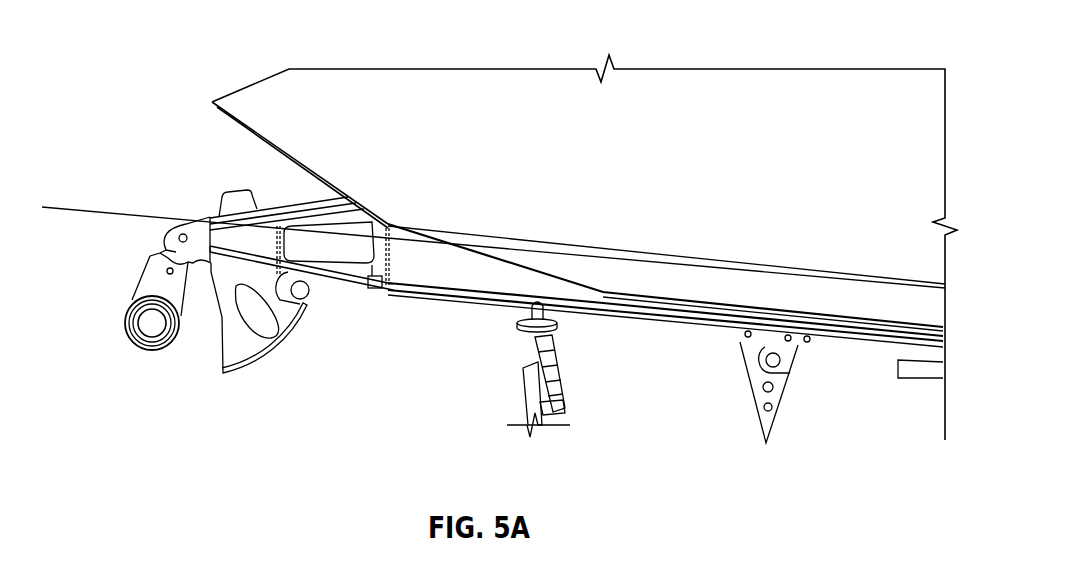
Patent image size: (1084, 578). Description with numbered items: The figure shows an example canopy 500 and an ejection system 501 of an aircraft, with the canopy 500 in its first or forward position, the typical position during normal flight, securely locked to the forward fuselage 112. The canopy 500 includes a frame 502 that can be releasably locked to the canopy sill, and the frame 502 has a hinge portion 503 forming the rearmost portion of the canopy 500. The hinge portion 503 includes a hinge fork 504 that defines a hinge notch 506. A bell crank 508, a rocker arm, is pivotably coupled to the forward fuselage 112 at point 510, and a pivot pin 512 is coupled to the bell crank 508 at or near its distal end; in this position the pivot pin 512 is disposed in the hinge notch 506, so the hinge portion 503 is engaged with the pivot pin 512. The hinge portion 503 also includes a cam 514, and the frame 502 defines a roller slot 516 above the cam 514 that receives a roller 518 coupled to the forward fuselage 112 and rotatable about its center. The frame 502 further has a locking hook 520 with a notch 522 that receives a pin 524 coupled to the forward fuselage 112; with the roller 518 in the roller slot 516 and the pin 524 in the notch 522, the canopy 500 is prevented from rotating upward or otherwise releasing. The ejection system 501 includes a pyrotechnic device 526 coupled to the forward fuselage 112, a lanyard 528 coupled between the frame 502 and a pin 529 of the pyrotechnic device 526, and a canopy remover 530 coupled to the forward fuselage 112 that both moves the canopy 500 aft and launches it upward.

The forward fuselage 112 is at (83, 207).
The canopy 500 is at (662, 50).
The ejection system 501 is at (645, 450).
The frame 502 is at (320, 280).
The hinge portion 503 is at (212, 176).
The hinge fork 504 is at (163, 250).
The hinge notch 506 is at (183, 219).
The bell crank 508 is at (130, 306).
The point 510 is at (149, 337).
The pivot pin 512 is at (172, 240).
The cam 514 is at (248, 357).
The roller slot 516 is at (318, 288).
The roller 518 is at (310, 290).
The locking hook 520 is at (752, 376).
The notch 522 is at (795, 371).
The pin 524 is at (782, 358).
The pyrotechnic device 526 is at (565, 377).
The lanyard 528 is at (555, 328).
The pin 529 is at (552, 348).
The canopy remover 530 is at (933, 373).